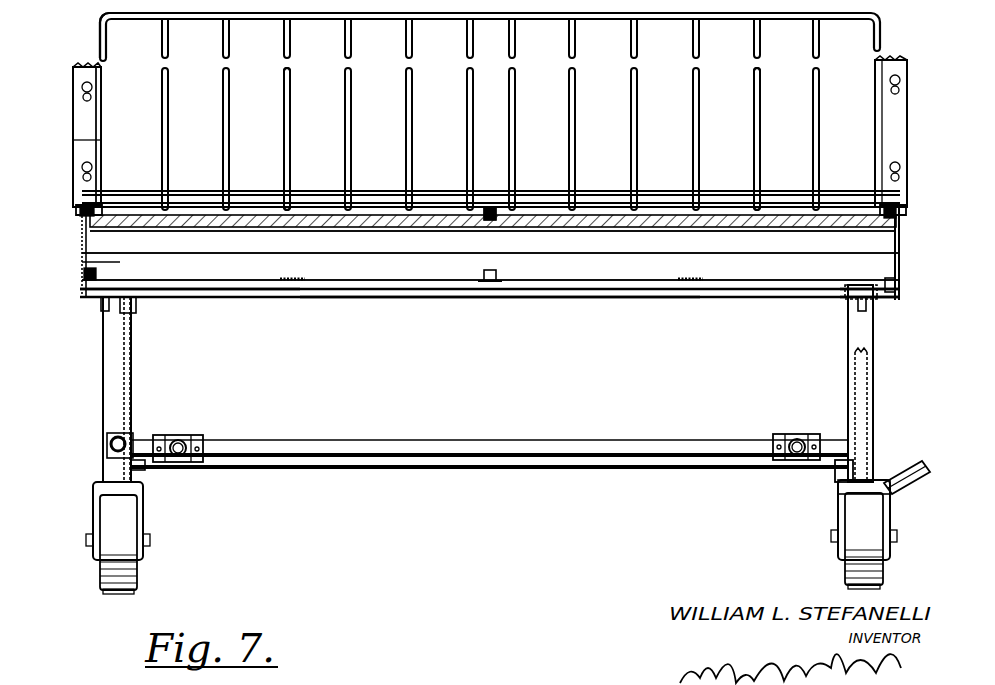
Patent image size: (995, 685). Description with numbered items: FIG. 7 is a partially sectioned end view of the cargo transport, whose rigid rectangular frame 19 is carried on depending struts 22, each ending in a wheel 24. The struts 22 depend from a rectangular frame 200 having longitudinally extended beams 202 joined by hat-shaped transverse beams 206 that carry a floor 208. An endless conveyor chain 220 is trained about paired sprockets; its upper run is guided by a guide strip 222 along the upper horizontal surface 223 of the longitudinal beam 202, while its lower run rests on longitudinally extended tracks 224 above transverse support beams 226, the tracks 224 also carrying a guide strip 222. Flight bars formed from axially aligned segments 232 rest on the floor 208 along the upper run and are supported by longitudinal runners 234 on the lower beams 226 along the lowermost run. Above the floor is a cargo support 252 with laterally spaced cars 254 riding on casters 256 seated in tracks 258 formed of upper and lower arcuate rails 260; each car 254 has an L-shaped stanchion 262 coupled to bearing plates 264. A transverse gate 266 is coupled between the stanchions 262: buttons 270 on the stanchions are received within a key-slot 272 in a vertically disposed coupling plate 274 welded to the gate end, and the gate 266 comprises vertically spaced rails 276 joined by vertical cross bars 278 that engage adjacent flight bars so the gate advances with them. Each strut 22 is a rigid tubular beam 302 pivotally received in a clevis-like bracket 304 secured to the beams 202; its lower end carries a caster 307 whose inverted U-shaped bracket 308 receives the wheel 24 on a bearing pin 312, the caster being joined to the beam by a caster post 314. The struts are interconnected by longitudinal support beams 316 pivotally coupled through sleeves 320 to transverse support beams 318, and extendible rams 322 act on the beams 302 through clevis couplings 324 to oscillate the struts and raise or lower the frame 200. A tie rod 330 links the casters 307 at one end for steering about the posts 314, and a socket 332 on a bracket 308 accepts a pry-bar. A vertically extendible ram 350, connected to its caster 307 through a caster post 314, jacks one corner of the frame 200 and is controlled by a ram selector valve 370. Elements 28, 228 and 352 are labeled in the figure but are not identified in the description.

The rigid rectangular frame 19 is at (82, 312).
The depending strut 22 is at (133, 366).
The wheel 24 is at (130, 590).
The guard rail bar 28 is at (729, 226).
The rectangular frame 200 is at (891, 306).
The longitudinally extended beam 202 is at (75, 332).
The hat-shaped transverse beam 206 is at (406, 246).
The floor 208 is at (325, 215).
The endless conveyor chain 220 is at (88, 206).
The guide strip 222 is at (487, 212).
The upper horizontal surface 223 is at (82, 291).
The longitudinally extended track 224 is at (102, 284).
The transverse support beam 226 is at (386, 293).
The retaining clip 228 is at (496, 226).
The axially aligned segment 232 is at (263, 205).
The longitudinal runner 234 is at (290, 283).
The cargo support 252 is at (886, 24).
The car 254 is at (77, 62).
The caster 256 is at (90, 236).
The track 258 is at (84, 262).
The arcuate rail 260 is at (136, 265).
The stanchion 262 is at (72, 80).
The bearing plate 264 is at (70, 206).
The transverse gate 266 is at (99, 14).
The button 270 is at (93, 88).
The key-slot 272 is at (98, 97).
The coupling plate 274 is at (88, 140).
The rail 276 is at (451, 25).
The cross bar 278 is at (517, 138).
The rigid tubular beam 302 is at (103, 379).
The clevis-like bracket 304 is at (133, 313).
The caster 307 is at (489, 556).
The inverted U-shaped bracket 308 is at (144, 513).
The axle or bearing pin 312 is at (151, 543).
The caster post 314 is at (860, 470).
The longitudinally extending support beam 316 is at (172, 463).
The transversely extended support beam 318 is at (558, 447).
The sleeve 320 is at (179, 437).
The fluid-activated extendible ram 322 is at (118, 457).
The clevis coupling 324 is at (108, 446).
The tie rod 330 is at (441, 470).
The socket 332 is at (911, 491).
The vertically extendible ram 350 is at (855, 368).
The caster fork 352 is at (832, 494).
The ram selector valve 370 is at (921, 300).